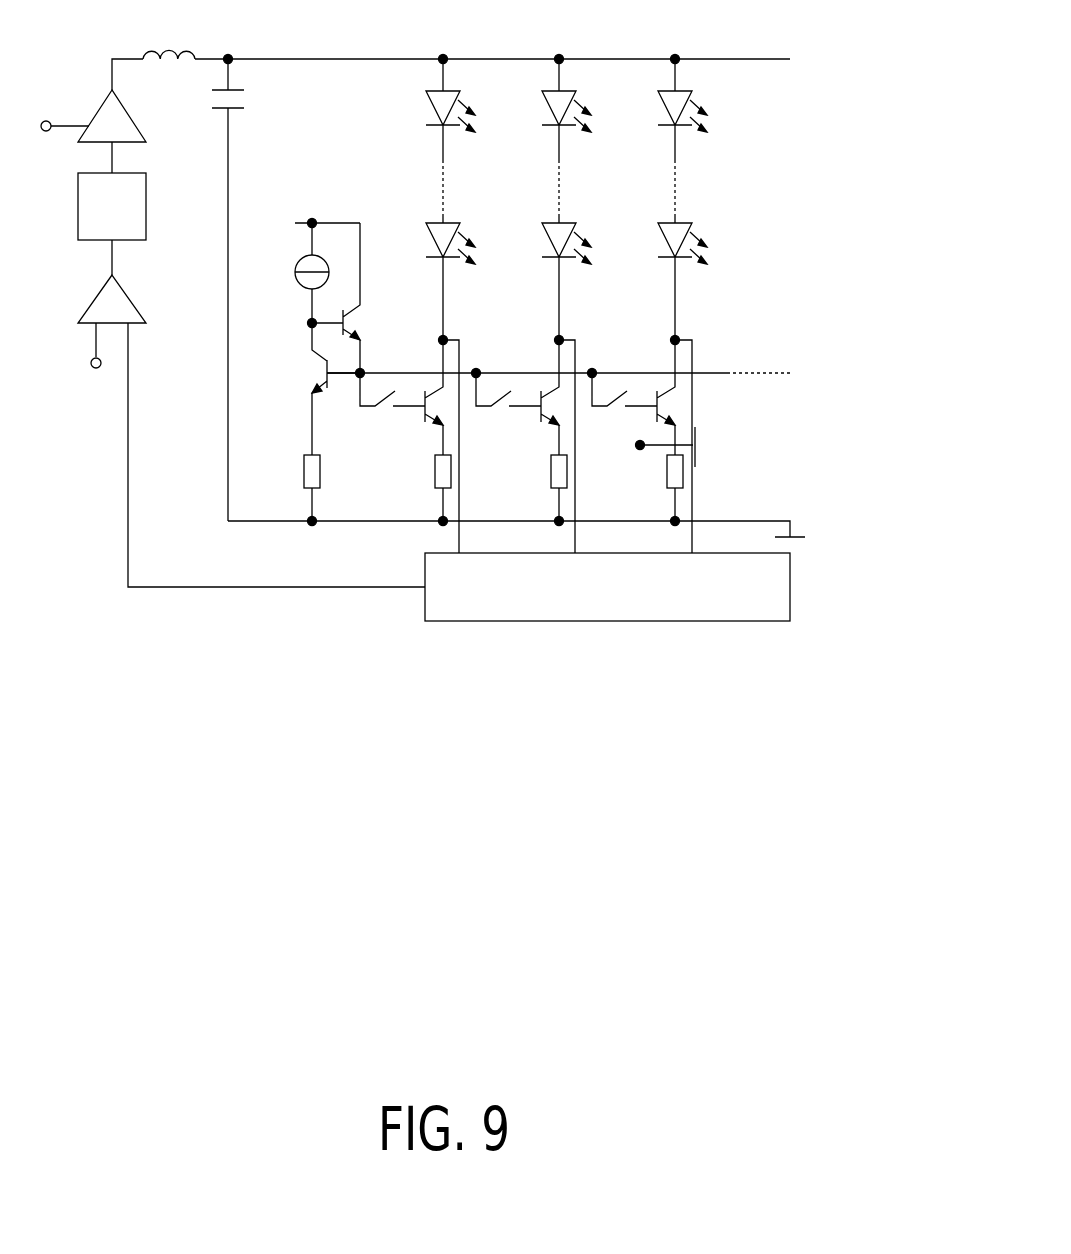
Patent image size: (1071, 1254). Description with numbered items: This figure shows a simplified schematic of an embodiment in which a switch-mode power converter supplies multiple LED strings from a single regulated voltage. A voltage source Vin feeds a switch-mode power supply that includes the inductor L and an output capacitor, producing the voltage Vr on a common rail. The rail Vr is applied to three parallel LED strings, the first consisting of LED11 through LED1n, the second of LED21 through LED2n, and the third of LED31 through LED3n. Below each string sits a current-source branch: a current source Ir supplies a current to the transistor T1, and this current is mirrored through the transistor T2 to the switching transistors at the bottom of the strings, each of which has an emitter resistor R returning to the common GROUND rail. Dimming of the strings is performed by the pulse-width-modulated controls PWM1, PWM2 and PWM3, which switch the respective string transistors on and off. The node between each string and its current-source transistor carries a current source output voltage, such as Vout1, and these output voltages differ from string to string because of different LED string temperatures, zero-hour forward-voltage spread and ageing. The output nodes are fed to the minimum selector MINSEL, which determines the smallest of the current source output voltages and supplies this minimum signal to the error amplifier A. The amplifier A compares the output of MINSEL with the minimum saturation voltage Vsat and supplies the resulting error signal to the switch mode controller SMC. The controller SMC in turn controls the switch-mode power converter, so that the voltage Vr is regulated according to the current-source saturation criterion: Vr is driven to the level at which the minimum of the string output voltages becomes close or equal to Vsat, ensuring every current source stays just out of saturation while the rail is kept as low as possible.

The inductor L is at (169, 31).
The voltage Vr is at (228, 273).
The voltage source Vin is at (93, 116).
The switch mode controller SMC is at (112, 191).
The error amplifier A is at (112, 281).
The minimum saturation voltage Vsat is at (63, 350).
The current source Ir is at (277, 296).
The transistor T1 is at (314, 389).
The transistor T2 is at (355, 300).
The LED LED11 is at (481, 112).
The LED LED1n is at (481, 250).
The LED LED21 is at (598, 112).
The LED LED2n is at (600, 250).
The LED LED31 is at (715, 112).
The LED LED3n is at (717, 250).
The current source output voltage Vout1 is at (603, 433).
The PWM signal PWM1 is at (390, 393).
The PWM signal PWM2 is at (507, 393).
The PWM signal PWM3 is at (637, 403).
The emitter resistor R is at (475, 475).
The ground rail GROUND is at (580, 522).
The minimum selector MINSEL is at (607, 587).